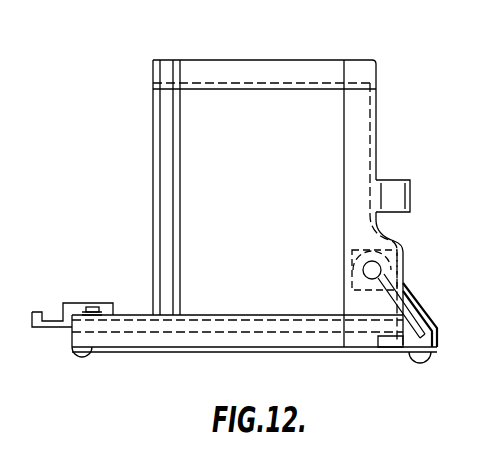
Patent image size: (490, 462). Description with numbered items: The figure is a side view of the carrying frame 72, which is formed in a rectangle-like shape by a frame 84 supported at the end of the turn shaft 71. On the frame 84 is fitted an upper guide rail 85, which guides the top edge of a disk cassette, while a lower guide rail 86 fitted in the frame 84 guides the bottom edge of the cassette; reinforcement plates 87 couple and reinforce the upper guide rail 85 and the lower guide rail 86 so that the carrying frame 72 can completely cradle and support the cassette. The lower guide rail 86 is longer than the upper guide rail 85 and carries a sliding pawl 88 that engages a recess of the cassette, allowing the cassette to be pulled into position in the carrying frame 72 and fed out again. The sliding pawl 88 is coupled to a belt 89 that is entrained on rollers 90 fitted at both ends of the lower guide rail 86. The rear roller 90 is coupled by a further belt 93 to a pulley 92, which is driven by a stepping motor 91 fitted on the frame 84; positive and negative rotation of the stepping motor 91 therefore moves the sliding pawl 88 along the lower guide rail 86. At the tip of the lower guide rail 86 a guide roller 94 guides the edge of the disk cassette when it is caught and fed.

The carrying frame 72 is at (318, 60).
The frame 84 is at (355, 123).
The upper guide rail 85 is at (240, 70).
The reinforcement plate 87 is at (163, 153).
The turn shaft 71 is at (400, 184).
The lower guide rail 86 is at (243, 313).
The belt 89 is at (297, 353).
The roller 90 is at (420, 311).
The stepping motor 91 is at (395, 264).
The pulley 92 is at (364, 270).
The belt 93 is at (381, 286).
The sliding pawl 88 is at (40, 311).
The guide roller 94 is at (93, 306).